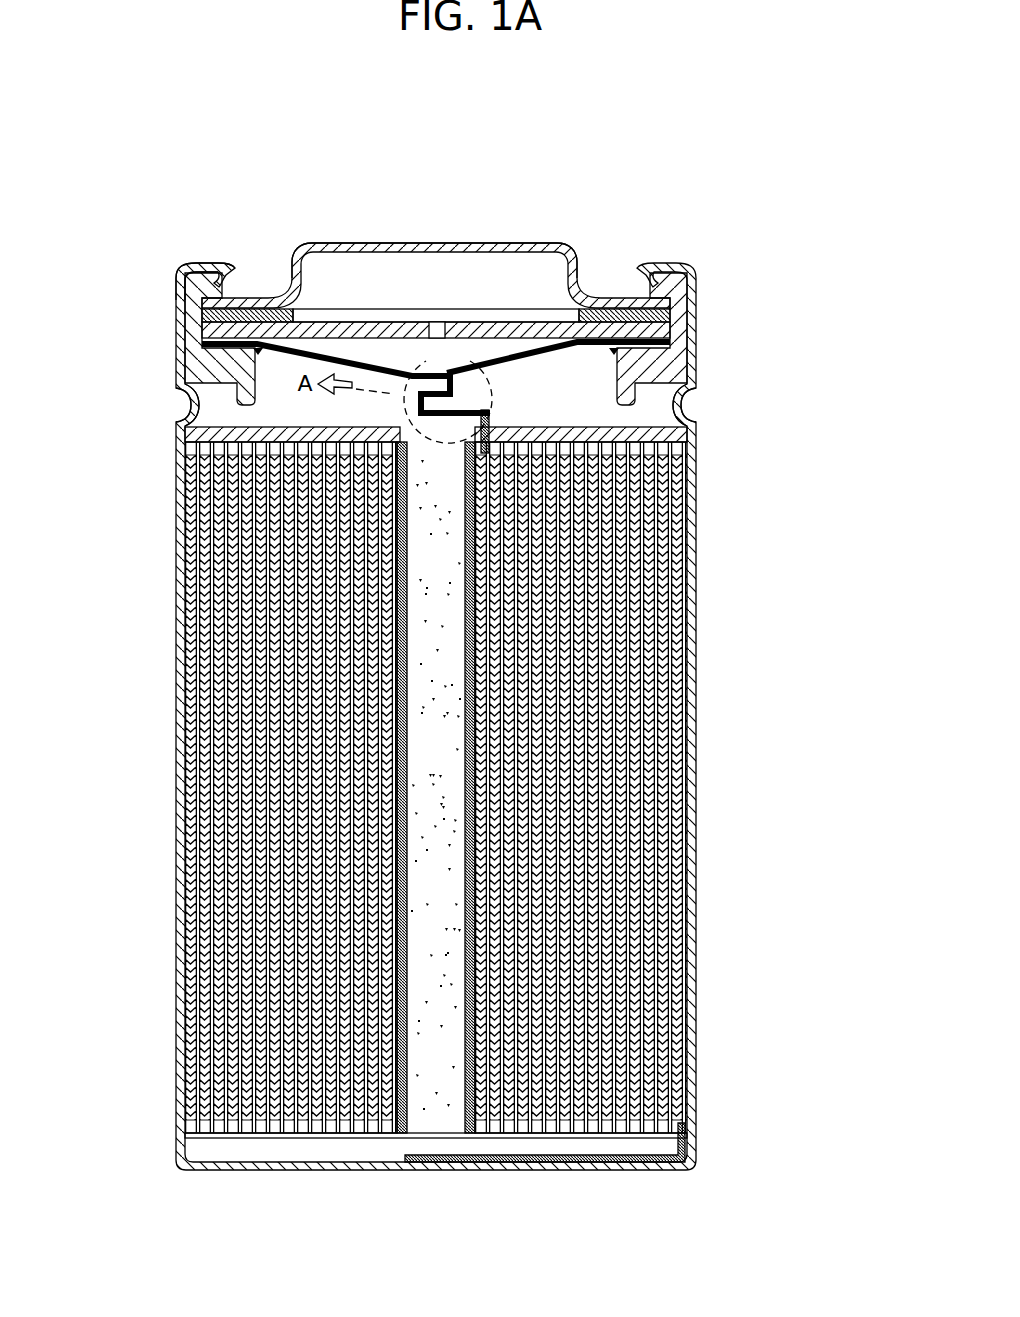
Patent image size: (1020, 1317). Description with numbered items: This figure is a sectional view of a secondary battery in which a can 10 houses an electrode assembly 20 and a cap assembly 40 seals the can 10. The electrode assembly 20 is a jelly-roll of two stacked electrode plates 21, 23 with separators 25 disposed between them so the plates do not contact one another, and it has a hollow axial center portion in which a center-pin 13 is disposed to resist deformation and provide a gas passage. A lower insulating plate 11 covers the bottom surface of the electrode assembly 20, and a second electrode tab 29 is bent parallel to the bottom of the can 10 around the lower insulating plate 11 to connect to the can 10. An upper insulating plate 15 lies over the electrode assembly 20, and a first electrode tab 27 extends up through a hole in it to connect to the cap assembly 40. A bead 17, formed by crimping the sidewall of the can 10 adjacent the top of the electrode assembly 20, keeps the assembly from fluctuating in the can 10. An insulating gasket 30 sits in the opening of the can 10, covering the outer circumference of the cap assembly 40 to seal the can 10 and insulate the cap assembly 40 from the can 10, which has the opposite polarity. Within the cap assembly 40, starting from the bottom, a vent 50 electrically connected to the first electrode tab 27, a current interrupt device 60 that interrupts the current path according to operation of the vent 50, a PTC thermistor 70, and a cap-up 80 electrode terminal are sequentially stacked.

The can 10 is at (180, 535).
The lower insulating plate 11 is at (313, 1138).
The center-pin 13 is at (418, 598).
The upper insulating plate 15 is at (242, 427).
The bead 17 is at (176, 397).
The electrode assembly 20 is at (495, 766).
The electrode plate 21 is at (640, 616).
The electrode plate 23 is at (660, 549).
The separator 25 is at (674, 503).
The first electrode tab 27 is at (491, 411).
The second electrode tab 29 is at (613, 1165).
The insulating gasket 30 is at (676, 271).
The cap assembly 40 is at (305, 136).
The vent 50 is at (352, 343).
The current interrupt device 60 is at (481, 327).
The PTC thermistor 70 is at (628, 308).
The cap-up 80 is at (398, 250).